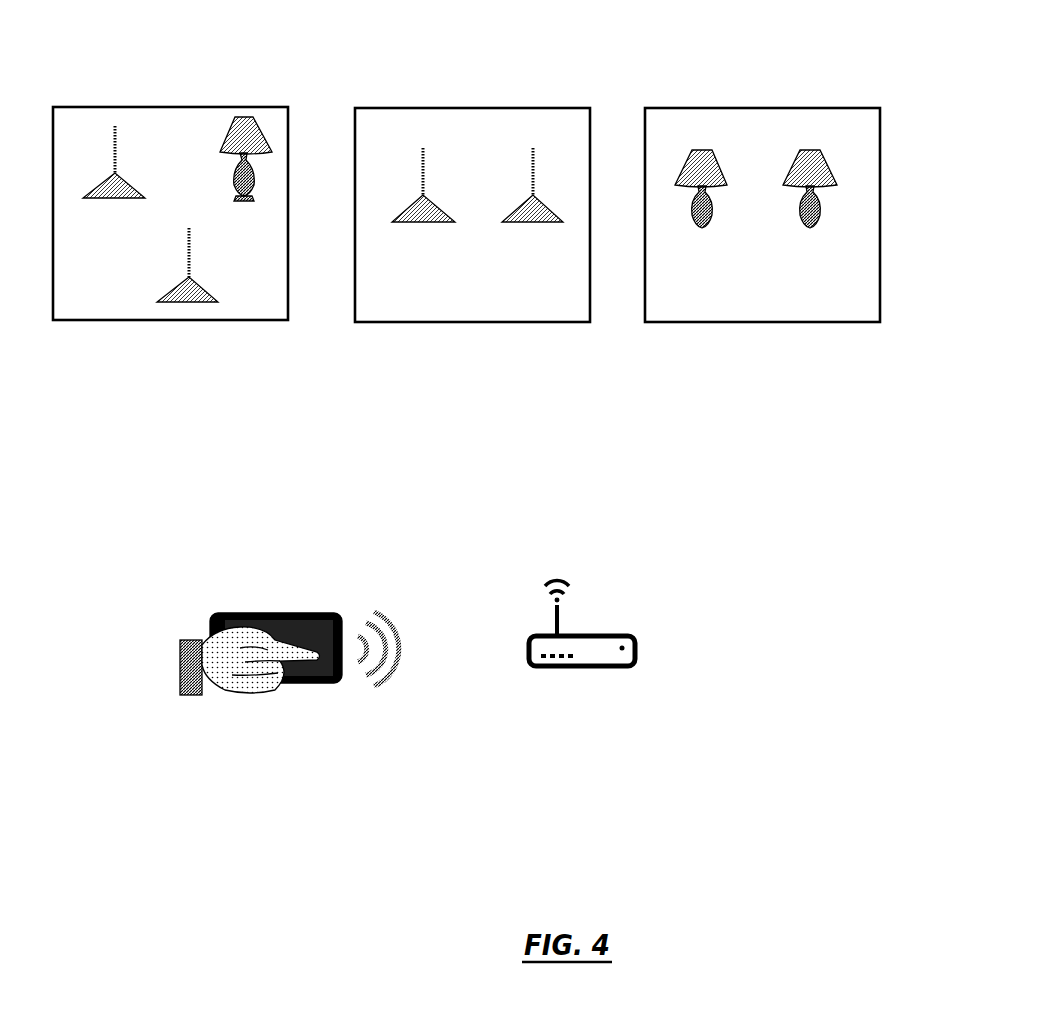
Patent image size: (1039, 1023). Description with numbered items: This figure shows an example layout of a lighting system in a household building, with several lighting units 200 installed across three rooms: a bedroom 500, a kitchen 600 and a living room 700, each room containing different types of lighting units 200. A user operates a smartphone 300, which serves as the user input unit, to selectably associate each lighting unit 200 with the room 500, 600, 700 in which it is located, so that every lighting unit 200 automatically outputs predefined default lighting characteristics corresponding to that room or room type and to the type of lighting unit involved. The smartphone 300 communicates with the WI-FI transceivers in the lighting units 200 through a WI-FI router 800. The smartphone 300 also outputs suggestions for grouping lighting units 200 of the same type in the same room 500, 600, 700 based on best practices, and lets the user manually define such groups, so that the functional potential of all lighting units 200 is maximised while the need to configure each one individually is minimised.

The lighting unit 200 is at (125, 127).
The smartphone 300 is at (292, 698).
The bedroom 500 is at (122, 276).
The kitchen 600 is at (430, 272).
The living room 700 is at (723, 290).
The WI-FI router 800 is at (652, 650).